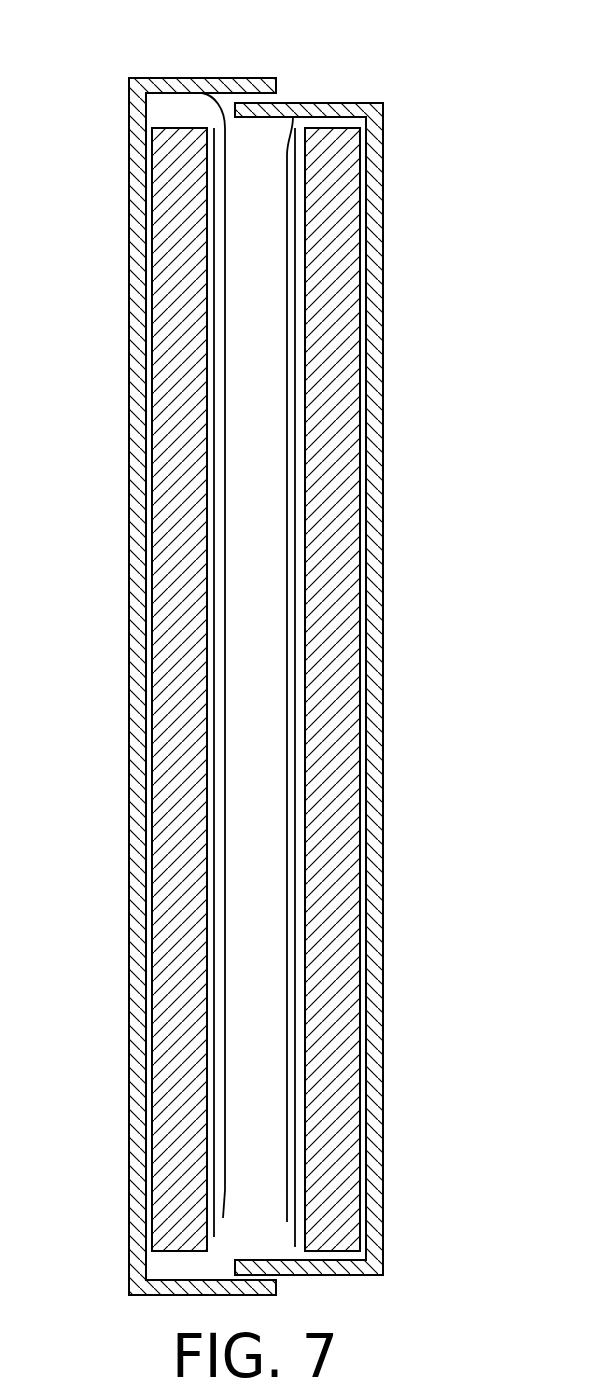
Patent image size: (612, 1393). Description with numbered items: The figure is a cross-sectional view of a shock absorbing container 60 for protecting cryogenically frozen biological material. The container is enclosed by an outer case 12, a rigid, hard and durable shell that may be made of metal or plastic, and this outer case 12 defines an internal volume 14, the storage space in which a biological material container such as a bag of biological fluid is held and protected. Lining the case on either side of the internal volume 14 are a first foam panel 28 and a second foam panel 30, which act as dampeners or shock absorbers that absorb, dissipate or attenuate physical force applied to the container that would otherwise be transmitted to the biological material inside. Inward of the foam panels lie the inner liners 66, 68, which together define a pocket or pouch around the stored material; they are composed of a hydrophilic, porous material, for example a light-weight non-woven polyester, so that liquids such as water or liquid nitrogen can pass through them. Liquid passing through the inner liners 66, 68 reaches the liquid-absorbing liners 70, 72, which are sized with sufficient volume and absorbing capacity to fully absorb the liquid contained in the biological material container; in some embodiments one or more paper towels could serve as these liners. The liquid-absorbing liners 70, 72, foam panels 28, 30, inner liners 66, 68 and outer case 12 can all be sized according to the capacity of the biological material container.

The heat exchanger assembly 60 is at (213, 65).
The outer case 12 is at (253, 78).
The internal volume 14 is at (242, 645).
The first foam panel 28 is at (332, 252).
The second foam panel 30 is at (172, 172).
The inner liner 66 is at (228, 162).
The inner liner 68 is at (287, 228).
The liquid-absorbing liner 70 is at (217, 1232).
The liquid-absorbing liner 72 is at (293, 1232).